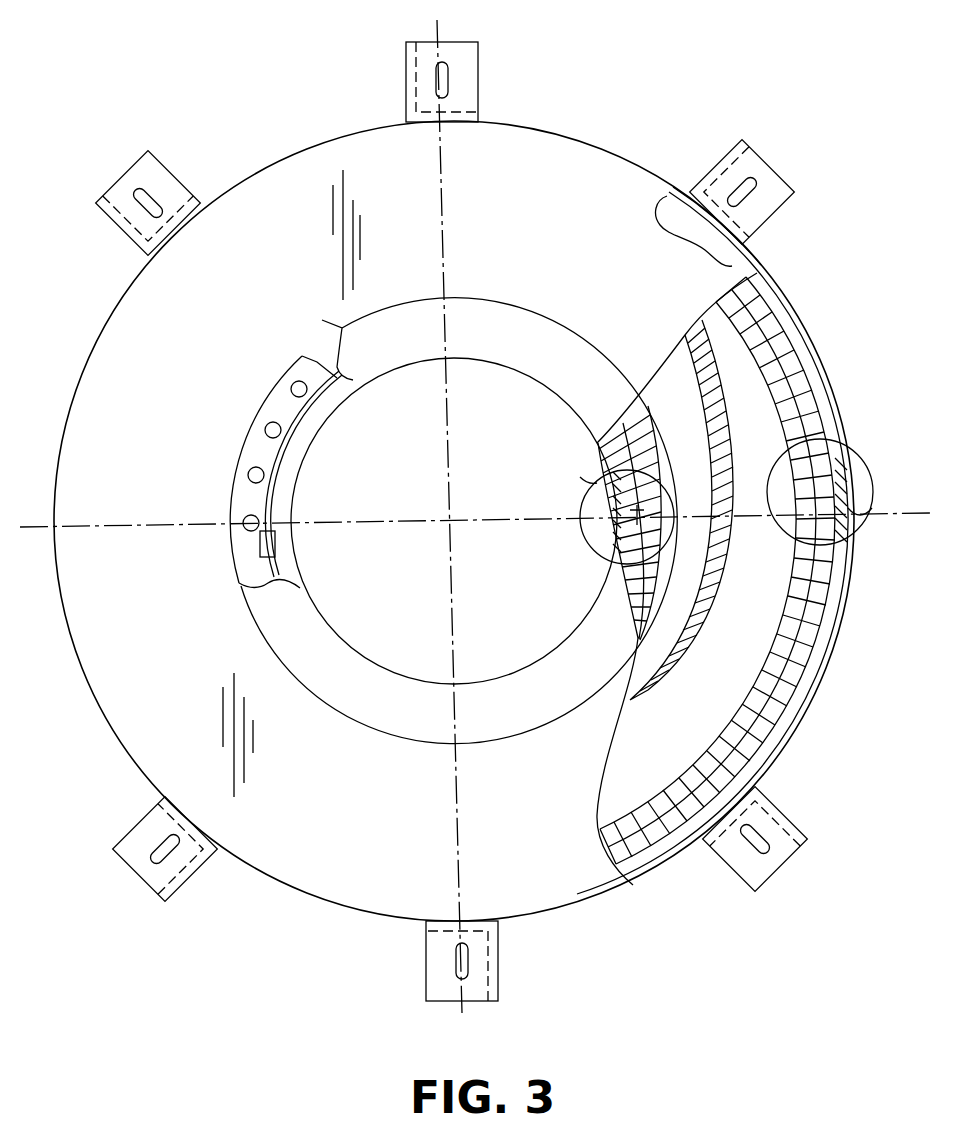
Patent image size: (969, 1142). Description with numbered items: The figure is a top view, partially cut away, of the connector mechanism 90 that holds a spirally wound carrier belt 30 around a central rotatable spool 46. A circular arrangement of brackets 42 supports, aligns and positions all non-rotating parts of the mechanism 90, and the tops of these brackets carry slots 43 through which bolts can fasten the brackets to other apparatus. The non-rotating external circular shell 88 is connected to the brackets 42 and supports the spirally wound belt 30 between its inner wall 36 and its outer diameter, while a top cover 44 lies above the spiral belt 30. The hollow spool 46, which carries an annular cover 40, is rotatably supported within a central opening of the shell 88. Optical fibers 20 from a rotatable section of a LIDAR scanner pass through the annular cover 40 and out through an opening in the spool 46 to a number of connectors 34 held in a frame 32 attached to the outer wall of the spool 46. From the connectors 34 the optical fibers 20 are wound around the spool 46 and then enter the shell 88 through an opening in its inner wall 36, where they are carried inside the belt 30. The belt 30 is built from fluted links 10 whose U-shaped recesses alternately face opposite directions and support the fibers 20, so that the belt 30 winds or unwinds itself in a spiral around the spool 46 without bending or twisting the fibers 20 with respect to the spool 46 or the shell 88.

The chain link 10 is at (700, 615).
The link detail 20 is at (607, 507).
The chain track 30 is at (716, 570).
The mounting plate 32 is at (290, 390).
The mounting holes 34 is at (248, 472).
The guide edge 36 is at (612, 480).
The hub opening 40 is at (478, 350).
The mounting tab 42 is at (478, 62).
The tab slot 43 is at (432, 80).
The cutout opening 44 is at (598, 778).
The guide surface 46 is at (607, 557).
The rim 88 is at (813, 690).
The housing assembly 90 is at (252, 166).